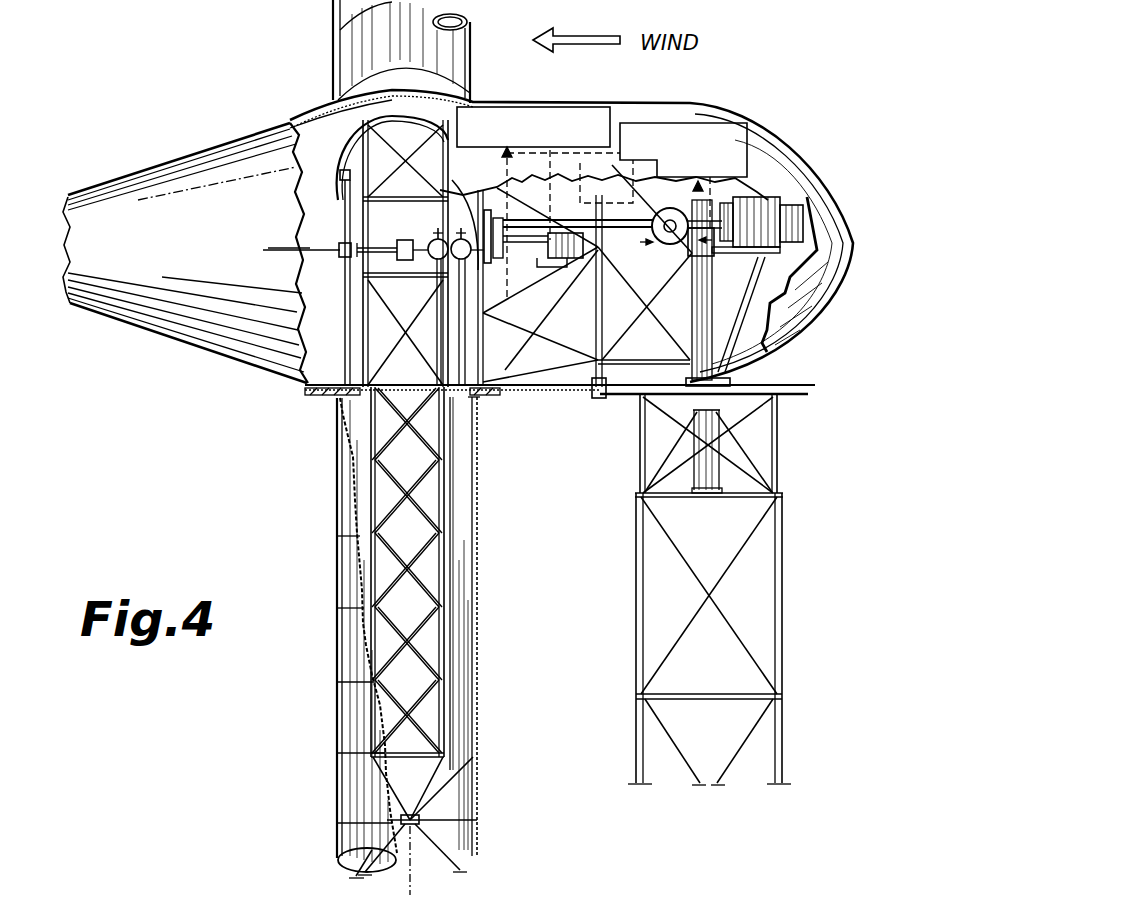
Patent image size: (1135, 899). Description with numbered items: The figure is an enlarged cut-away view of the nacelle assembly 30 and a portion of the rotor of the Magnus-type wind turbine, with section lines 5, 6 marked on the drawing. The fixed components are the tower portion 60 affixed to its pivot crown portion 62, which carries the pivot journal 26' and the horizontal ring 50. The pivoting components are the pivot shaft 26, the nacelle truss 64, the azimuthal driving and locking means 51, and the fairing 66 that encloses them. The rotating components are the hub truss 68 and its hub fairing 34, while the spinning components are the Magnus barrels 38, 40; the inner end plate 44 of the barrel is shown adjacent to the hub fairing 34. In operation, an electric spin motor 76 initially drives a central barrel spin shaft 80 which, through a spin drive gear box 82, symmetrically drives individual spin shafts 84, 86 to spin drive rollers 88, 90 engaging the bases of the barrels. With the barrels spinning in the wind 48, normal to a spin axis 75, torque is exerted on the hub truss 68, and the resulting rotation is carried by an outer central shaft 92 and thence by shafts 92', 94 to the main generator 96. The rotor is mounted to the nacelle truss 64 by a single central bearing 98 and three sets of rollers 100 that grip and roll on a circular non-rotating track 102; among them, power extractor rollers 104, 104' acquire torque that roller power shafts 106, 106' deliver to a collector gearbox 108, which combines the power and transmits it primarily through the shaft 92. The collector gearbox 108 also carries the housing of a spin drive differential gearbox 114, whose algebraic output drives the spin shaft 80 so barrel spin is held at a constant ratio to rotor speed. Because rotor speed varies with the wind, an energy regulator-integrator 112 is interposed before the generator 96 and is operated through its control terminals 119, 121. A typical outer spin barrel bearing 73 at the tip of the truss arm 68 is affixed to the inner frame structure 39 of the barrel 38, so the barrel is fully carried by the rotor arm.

The section line 5 is at (330, 56).
The section line 6 is at (322, 402).
The pivot shaft 26 is at (695, 293).
The pivot journal 26' is at (702, 479).
The nacelle assembly 30 is at (706, 88).
The hub fairing 34 is at (174, 336).
The Magnus barrel 38 is at (480, 650).
The inner frame structure 39 is at (453, 800).
The Magnus barrel 40 is at (472, 69).
The inner end plate 44 is at (305, 394).
The wind 48 is at (592, 47).
The horizontal ring 50 is at (792, 397).
The azimuthal driving and locking means 51 is at (586, 401).
The tower portion 60 is at (784, 626).
The pivot crown portion 62 is at (779, 460).
The nacelle truss 64 is at (630, 357).
The fairing 66 is at (855, 238).
The hub truss 68 is at (452, 552).
The outer spin barrel bearing 73 is at (430, 836).
The spin axis 75 is at (412, 889).
The electric spin motor 76 is at (574, 262).
The central barrel spin shaft 80 is at (375, 242).
The spin drive gear box 82 is at (339, 259).
The individual spin shaft 84 is at (343, 309).
The individual spin shaft 86 is at (345, 228).
The drive roller 88 is at (350, 382).
The drive roller 90 is at (342, 172).
The outer central shaft 92 is at (557, 206).
The main power shaft 92' is at (604, 209).
The shaft 94 is at (716, 258).
The main generator 96 is at (772, 198).
The central bearing 98 is at (484, 216).
The rollers 100 is at (435, 366).
The circular non-rotating track 102 is at (474, 455).
The power extractor roller 104 is at (416, 409).
The power extractor roller 104' is at (540, 288).
The roller power shaft 106 is at (432, 334).
The roller power shaft 106' is at (503, 341).
The collector gearbox 108 is at (436, 281).
The energy regulator-integrator 112 is at (750, 192).
The spin drive differential gearbox 114 is at (432, 242).
The control terminal 119 is at (652, 252).
The control terminal 121 is at (660, 277).